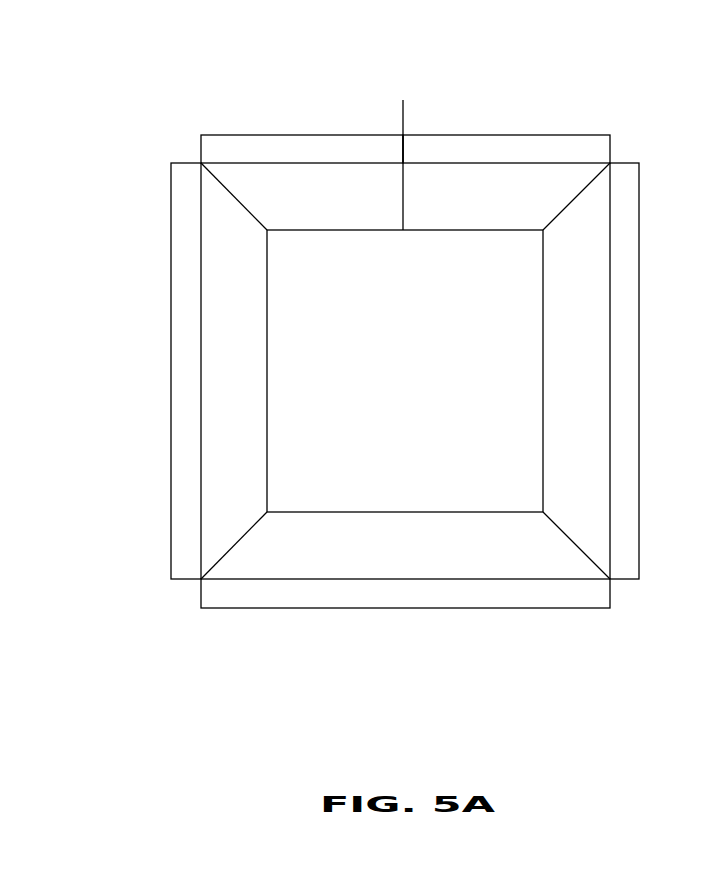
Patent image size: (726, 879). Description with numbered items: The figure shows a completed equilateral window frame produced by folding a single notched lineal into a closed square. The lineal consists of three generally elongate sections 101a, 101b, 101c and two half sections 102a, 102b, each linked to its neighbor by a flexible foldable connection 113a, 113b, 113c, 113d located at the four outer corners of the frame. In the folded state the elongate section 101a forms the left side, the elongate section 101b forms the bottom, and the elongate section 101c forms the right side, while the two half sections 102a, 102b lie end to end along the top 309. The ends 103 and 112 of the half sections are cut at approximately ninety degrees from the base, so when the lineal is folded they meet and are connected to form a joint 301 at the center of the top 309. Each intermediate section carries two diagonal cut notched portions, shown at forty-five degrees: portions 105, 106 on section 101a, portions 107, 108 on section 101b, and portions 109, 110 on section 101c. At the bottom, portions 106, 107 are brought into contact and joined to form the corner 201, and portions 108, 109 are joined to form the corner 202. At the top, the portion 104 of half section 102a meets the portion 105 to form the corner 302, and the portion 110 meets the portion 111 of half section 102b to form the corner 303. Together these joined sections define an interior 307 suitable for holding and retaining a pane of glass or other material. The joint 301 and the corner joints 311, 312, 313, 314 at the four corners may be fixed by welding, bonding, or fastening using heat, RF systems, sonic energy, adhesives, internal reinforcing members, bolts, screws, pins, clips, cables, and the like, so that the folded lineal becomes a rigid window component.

The elongate section 101a is at (220, 375).
The elongate section 101b is at (387, 550).
The elongate section 101c is at (585, 375).
The half section 102a is at (275, 190).
The half section 102b is at (523, 190).
The end 103 is at (398, 188).
The portion 104 is at (233, 192).
The diagonal cut notched portion 105 is at (246, 209).
The diagonal cut notched portion 106 is at (248, 532).
The diagonal cut notched portion 107 is at (236, 546).
The diagonal cut notched portion 108 is at (577, 547).
The diagonal cut notched portion 109 is at (565, 533).
The diagonal cut notched portion 110 is at (567, 207).
The portion 111 is at (577, 192).
The end 112 is at (407, 198).
The foldable connection 113a is at (192, 156).
The foldable connection 113b is at (194, 588).
The foldable connection 113c is at (617, 585).
The foldable connection 113d is at (613, 157).
The corner 201 is at (272, 510).
The corner 202 is at (540, 510).
The joint 301 is at (403, 100).
The corner 302 is at (270, 233).
The corner 303 is at (540, 233).
The interior 307 is at (425, 382).
The top 309 is at (558, 126).
The joint 311 is at (213, 175).
The joint 312 is at (213, 567).
The joint 313 is at (600, 568).
The joint 314 is at (595, 178).